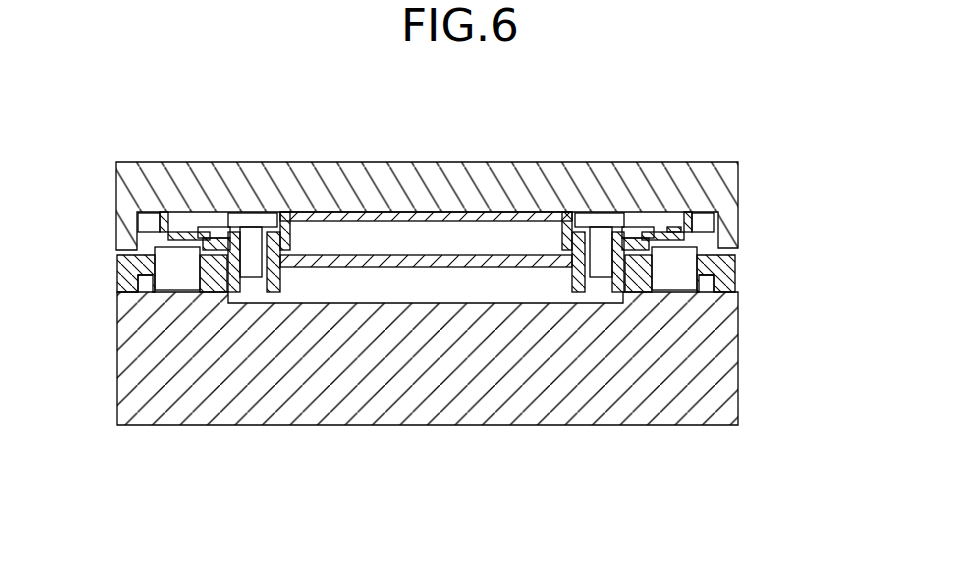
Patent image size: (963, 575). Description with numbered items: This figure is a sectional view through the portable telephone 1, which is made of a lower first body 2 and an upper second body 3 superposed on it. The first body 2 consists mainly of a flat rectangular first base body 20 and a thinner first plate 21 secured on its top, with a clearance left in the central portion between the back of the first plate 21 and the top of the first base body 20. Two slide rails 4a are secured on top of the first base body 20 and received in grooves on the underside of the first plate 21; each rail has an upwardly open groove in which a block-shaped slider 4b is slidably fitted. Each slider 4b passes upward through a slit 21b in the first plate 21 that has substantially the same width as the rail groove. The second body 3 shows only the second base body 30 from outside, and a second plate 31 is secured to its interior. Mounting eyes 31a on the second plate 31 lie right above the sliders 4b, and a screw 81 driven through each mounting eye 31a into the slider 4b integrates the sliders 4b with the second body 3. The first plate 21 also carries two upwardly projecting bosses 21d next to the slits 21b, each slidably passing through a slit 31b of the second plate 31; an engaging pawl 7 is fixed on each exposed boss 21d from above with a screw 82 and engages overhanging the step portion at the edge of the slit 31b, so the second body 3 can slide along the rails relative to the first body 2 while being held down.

The portable telephone 1 is at (873, 200).
The first body 2 is at (826, 268).
The second body 3 is at (826, 176).
The slide rail 4a is at (150, 292).
The slider 4b is at (138, 243).
The engaging pawl 7 is at (196, 238).
The first base body 20 is at (738, 323).
The first plate 21 is at (737, 277).
The slit 21b is at (120, 274).
The boss 21d is at (273, 250).
The second base body 30 is at (738, 196).
The second plate 31 is at (390, 230).
The mounting eye 31a is at (182, 255).
The slit 31b is at (238, 292).
The screw 81 is at (674, 229).
The screw 82 is at (253, 206).